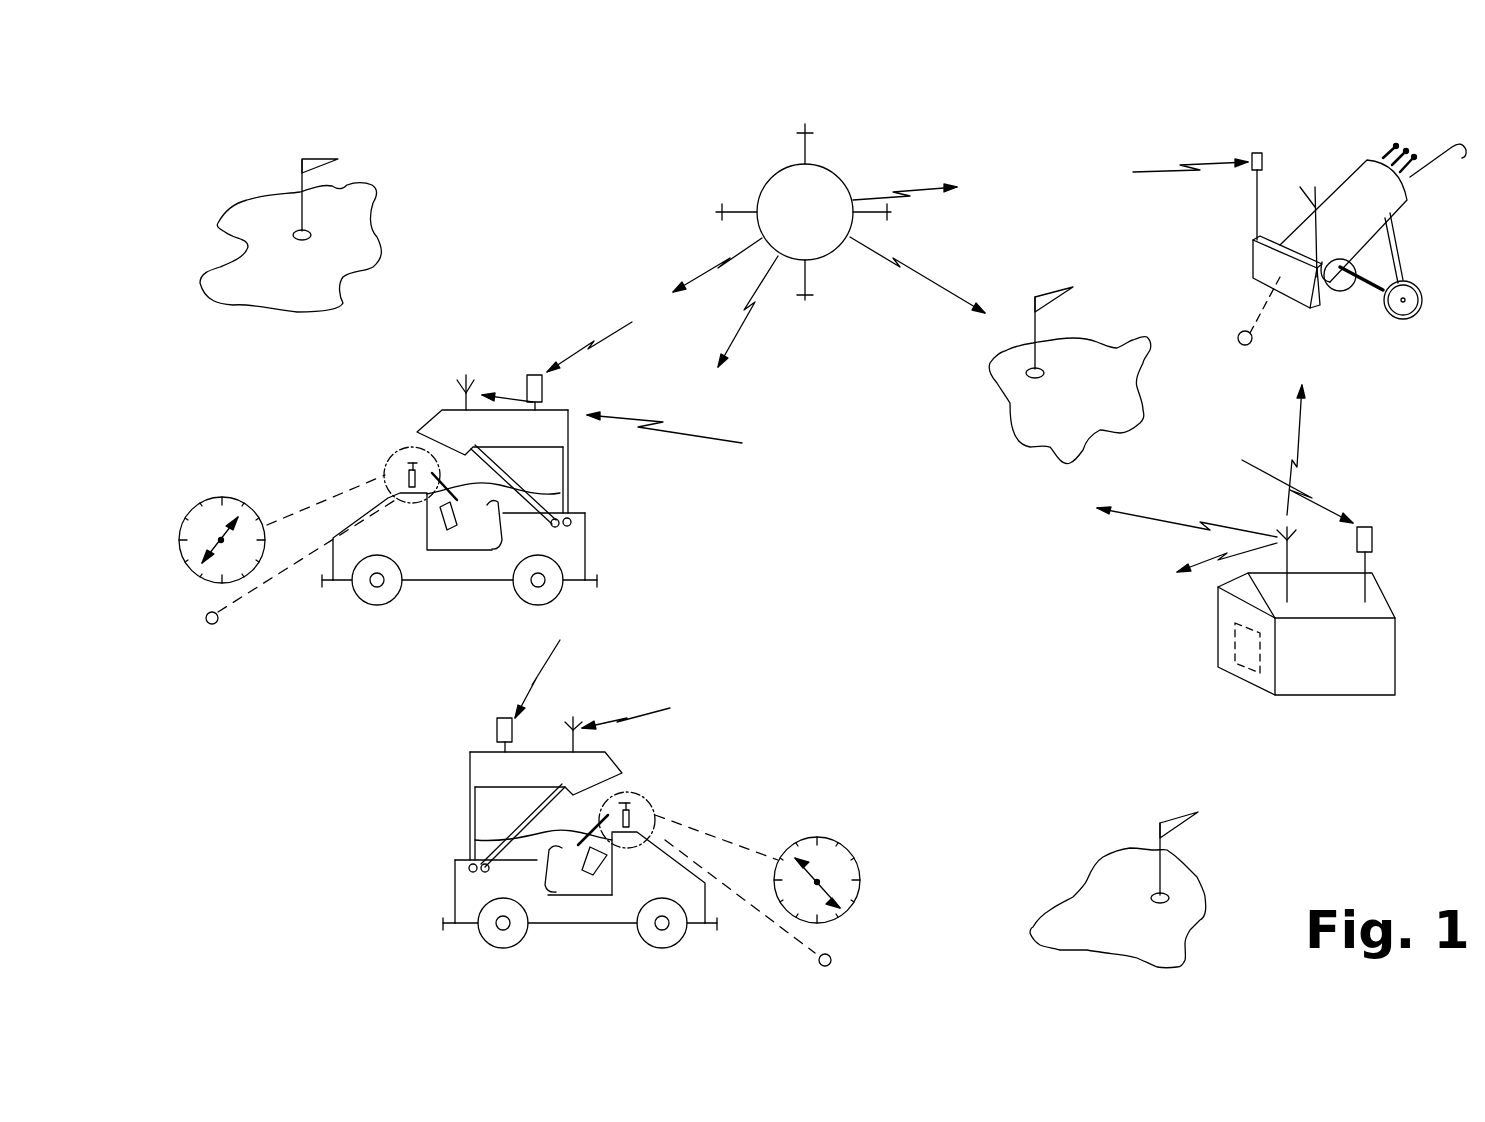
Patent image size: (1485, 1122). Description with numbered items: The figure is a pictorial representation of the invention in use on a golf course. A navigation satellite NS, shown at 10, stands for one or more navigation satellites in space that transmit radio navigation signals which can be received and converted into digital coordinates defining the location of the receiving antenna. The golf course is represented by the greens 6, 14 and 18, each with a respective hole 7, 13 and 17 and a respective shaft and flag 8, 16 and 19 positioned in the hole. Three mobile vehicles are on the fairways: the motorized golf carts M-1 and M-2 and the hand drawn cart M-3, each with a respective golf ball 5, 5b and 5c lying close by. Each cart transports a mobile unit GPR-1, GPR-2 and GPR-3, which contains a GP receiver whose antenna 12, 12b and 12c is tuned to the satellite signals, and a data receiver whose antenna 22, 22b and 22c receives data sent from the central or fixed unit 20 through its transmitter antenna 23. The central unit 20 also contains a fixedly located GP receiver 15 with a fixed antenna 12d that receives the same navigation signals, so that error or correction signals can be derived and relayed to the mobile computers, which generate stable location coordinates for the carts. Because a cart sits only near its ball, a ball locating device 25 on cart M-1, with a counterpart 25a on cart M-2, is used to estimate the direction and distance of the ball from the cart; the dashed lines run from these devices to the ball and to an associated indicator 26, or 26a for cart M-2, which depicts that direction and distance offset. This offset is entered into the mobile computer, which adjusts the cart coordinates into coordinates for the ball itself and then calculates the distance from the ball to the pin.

The shaft and flag 16 is at (298, 161).
The green 14 is at (375, 211).
The hole 13 is at (310, 239).
The navigation satellite 10 is at (848, 181).
The antenna 12c is at (1255, 152).
The data receiver antenna 22c is at (1317, 182).
The mobile unit GPR-3 is at (1252, 258).
The hand drawn cart M-3 is at (1390, 238).
The golf ball 5c is at (1238, 338).
The shaft and flag 8 is at (1048, 290).
The hole 7 is at (1026, 373).
The green 6 is at (1013, 433).
The data receiver antenna 22b is at (464, 378).
The antenna 12b is at (543, 393).
The direction indicator 26a is at (230, 497).
The display unit 25a is at (400, 470).
The mobile unit GPR-2 is at (560, 493).
The motorized golf cart M-2 is at (459, 507).
The golf ball 5b is at (217, 624).
The antenna 23 is at (1278, 531).
The fixed antenna 12d is at (1372, 527).
The central unit 20 is at (1395, 668).
The fixedly located GP receiver 15 is at (1237, 643).
The antenna 12 is at (497, 722).
The data receiver antenna 22 is at (580, 718).
The ball locating device 25 is at (640, 806).
The mobile unit GPR-1 is at (475, 840).
The motorized golf cart M-1 is at (580, 850).
The direction indicator 26 is at (822, 838).
The golf ball 5 is at (833, 960).
The shaft and flag 19 is at (1157, 825).
The green 18 is at (1190, 873).
The hole 17 is at (1150, 898).